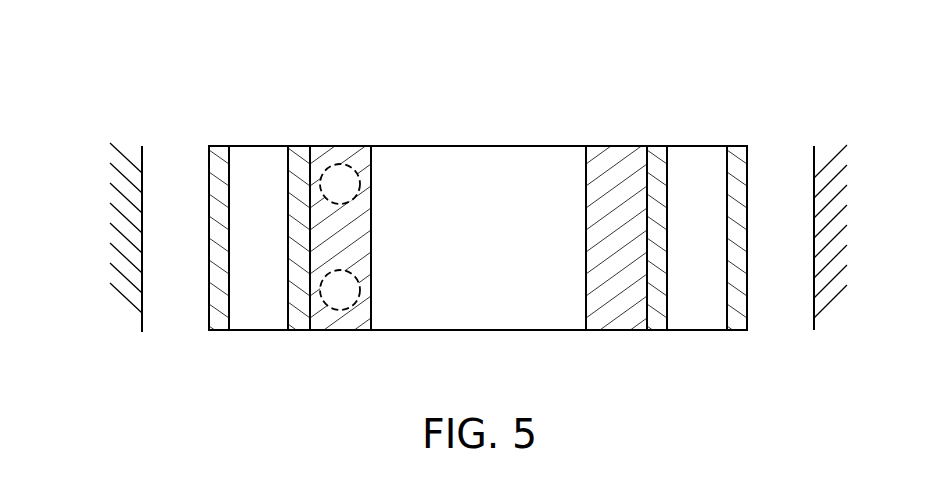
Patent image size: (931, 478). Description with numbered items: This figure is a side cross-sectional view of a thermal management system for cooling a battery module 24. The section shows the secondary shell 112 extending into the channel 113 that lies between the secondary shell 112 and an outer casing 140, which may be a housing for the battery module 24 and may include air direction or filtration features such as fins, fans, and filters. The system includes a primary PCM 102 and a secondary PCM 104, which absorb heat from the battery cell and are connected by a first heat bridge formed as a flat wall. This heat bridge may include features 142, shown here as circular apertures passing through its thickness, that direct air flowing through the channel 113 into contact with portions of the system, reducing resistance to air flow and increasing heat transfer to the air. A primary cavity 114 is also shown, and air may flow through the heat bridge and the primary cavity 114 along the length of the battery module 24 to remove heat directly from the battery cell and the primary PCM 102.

The battery module 24 is at (160, 93).
The primary PCM 102 is at (470, 145).
The secondary PCM 104 is at (697, 145).
The secondary shell 112 is at (220, 152).
The channel 113 is at (195, 250).
The primary cavity 114 is at (495, 250).
The outer casing 140 is at (142, 324).
The features 142 is at (338, 165).